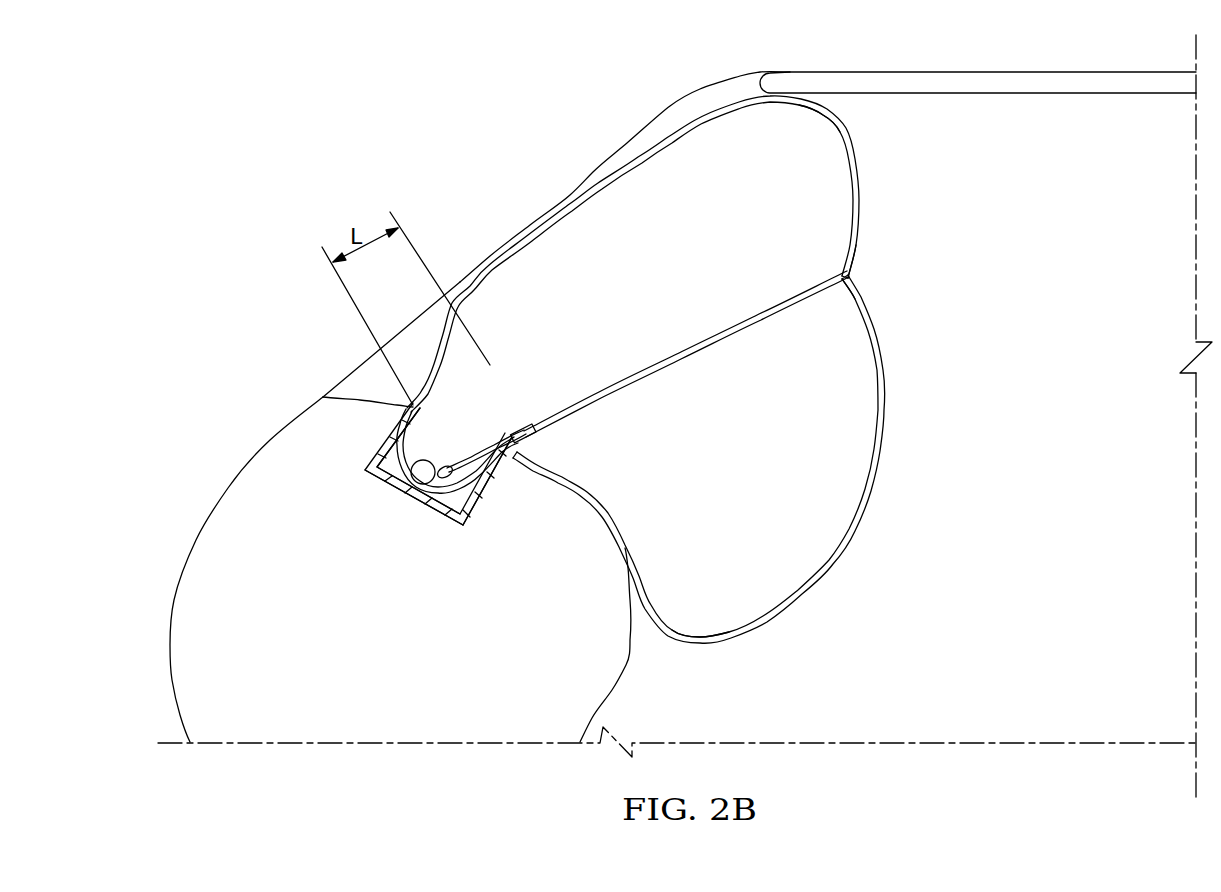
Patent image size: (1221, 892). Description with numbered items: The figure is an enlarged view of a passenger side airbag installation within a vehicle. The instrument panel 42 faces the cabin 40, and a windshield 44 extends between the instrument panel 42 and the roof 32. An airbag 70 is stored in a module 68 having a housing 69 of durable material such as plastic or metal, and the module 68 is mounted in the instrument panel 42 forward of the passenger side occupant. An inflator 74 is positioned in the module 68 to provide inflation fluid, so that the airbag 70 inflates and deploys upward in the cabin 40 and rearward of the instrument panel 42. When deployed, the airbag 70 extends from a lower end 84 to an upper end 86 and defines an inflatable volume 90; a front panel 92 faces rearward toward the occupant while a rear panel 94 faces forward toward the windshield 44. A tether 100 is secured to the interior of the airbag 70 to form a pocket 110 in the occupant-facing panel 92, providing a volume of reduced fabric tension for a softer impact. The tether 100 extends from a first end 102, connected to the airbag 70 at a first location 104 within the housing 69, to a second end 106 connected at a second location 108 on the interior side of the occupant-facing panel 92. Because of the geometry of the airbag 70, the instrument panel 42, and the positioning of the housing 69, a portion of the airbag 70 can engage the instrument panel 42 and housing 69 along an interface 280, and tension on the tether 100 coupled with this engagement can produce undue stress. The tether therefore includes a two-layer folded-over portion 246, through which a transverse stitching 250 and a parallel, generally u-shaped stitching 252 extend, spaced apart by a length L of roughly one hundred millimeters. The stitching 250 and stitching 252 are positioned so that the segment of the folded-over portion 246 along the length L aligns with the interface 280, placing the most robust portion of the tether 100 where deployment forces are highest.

The roof 32 is at (1032, 82).
The cabin 40 is at (998, 502).
The instrument panel 42 is at (435, 620).
The windshield 44 is at (437, 303).
The module 68 is at (347, 493).
The housing 69 is at (458, 520).
The airbag 70 is at (681, 384).
The inflator 74 is at (410, 484).
The lower end 84 is at (784, 638).
The upper end 86 is at (867, 118).
The inflatable volume 90 is at (655, 182).
The front panel 92 is at (882, 380).
The rear panel 94 is at (523, 231).
The tether 100 is at (692, 348).
The first end 102 is at (478, 408).
The first location 104 is at (492, 490).
The second end 106 is at (834, 300).
The second location 108 is at (843, 280).
The pocket 110 is at (880, 257).
The folded-over portion 246 is at (508, 418).
The stitching 250 is at (538, 437).
The stitching 252 is at (456, 466).
The interface 280 is at (523, 463).